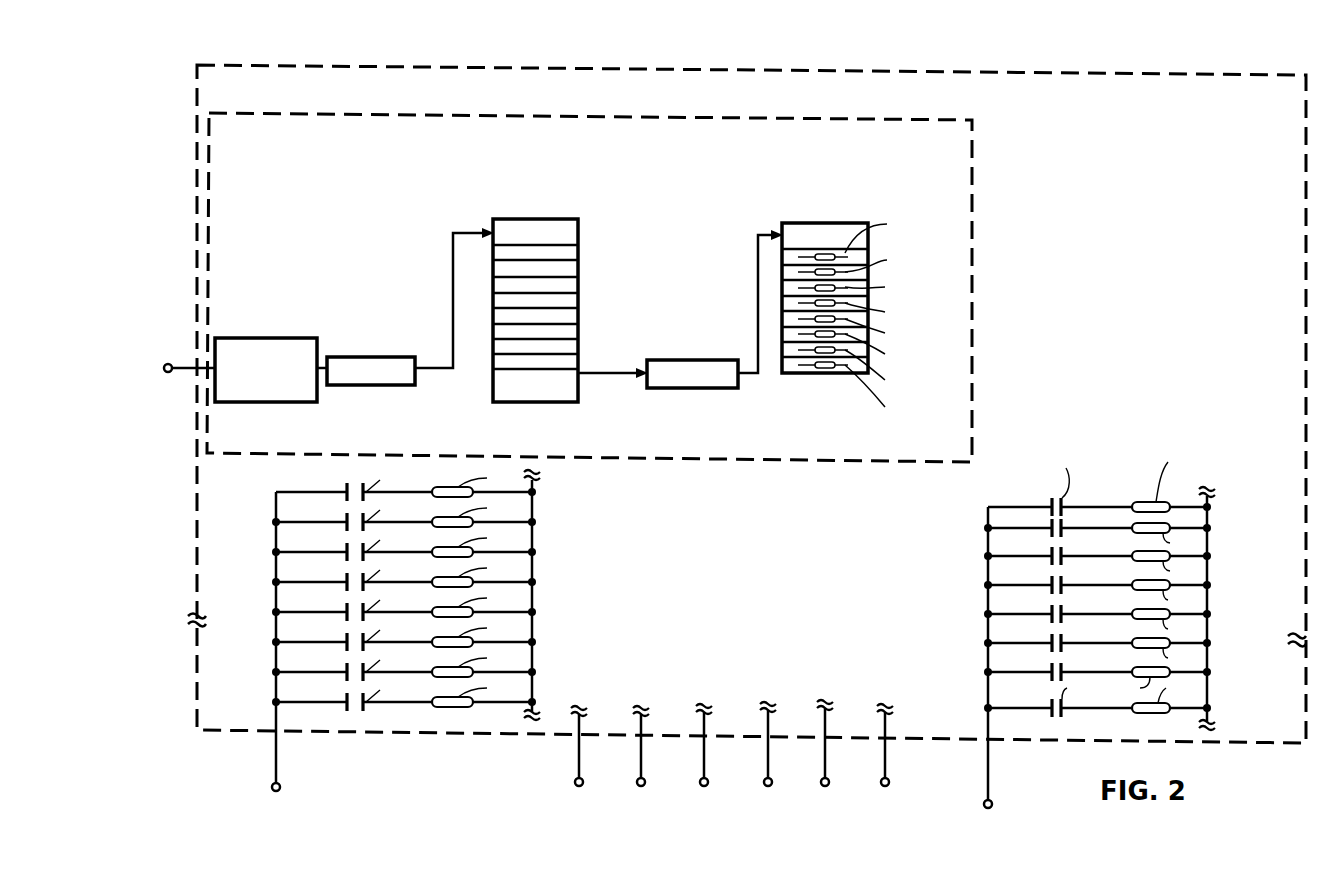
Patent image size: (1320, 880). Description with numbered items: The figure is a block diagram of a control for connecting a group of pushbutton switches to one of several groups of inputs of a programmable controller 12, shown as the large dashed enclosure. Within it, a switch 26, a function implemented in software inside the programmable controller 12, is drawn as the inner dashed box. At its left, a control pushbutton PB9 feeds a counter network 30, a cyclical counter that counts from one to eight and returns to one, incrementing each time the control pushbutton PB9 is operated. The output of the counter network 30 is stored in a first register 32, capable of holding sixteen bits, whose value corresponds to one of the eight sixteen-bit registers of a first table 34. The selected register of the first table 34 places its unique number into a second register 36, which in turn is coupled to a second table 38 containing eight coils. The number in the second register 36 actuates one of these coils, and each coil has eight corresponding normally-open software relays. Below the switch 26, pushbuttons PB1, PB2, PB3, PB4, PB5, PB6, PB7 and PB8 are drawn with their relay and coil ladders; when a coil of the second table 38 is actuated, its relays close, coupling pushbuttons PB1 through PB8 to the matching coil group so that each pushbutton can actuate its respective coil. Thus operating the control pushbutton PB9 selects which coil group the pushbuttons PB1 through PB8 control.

The programmable controller 12 is at (196, 698).
The switch 26 is at (785, 119).
The counter network 30 is at (228, 403).
The first register 32 is at (365, 388).
The first table 34 is at (528, 404).
The second register 36 is at (708, 390).
The second table 38 is at (793, 376).
The pushbutton PB1 is at (406, 637).
The pushbutton PB2 is at (579, 759).
The pushbutton PB3 is at (642, 759).
The pushbutton PB4 is at (703, 758).
The pushbutton PB5 is at (767, 757).
The pushbutton PB6 is at (824, 756).
The pushbutton PB7 is at (886, 758).
The pushbutton PB8 is at (1091, 641).
The control pushbutton PB9 is at (168, 362).